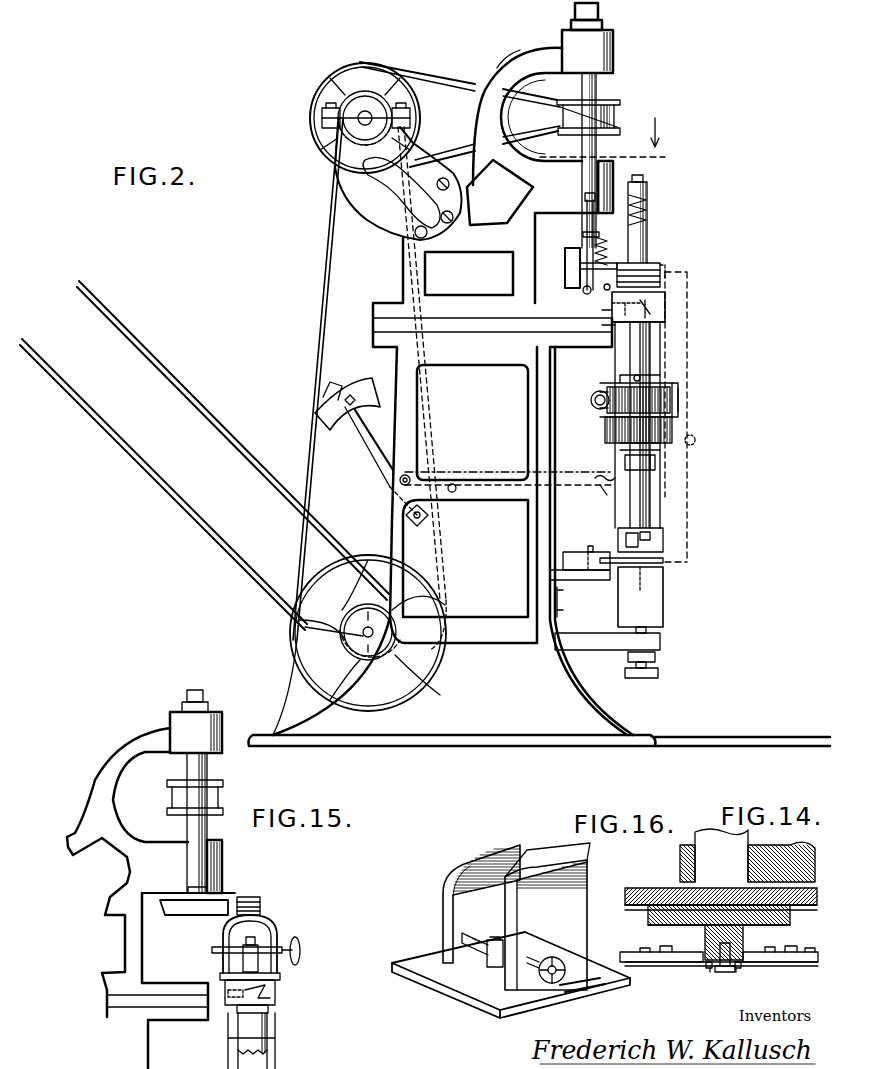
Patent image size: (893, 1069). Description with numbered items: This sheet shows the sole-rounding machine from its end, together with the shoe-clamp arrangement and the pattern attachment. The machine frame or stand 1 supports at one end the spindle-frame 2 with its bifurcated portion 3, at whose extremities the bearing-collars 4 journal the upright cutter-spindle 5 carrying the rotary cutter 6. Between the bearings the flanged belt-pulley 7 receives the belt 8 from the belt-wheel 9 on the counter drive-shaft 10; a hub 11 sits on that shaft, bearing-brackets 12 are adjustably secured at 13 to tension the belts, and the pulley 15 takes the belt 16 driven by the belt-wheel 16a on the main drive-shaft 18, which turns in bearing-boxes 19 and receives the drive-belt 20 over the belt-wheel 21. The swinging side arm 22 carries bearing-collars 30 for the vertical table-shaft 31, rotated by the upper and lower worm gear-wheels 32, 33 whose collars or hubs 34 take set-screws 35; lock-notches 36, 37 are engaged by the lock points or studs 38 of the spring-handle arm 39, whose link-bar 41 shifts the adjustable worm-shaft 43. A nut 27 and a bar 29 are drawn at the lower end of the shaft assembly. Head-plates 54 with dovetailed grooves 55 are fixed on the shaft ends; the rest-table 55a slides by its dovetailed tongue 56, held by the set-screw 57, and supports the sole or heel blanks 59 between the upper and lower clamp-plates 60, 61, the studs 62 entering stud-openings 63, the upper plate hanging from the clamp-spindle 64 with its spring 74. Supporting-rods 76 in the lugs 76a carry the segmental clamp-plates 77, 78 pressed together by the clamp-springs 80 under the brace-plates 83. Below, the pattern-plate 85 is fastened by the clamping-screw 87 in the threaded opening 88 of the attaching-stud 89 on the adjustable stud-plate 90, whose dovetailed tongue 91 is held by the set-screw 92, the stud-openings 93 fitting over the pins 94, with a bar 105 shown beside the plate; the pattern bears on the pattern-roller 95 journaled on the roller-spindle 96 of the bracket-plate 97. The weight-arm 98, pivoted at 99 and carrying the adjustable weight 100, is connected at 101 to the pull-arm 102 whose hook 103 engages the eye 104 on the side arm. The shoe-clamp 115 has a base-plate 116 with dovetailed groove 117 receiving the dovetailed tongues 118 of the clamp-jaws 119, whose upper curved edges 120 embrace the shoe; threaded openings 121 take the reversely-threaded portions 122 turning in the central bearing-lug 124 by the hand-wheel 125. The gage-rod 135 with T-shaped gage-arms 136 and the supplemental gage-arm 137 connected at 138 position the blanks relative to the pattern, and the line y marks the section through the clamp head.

In FIG. 2, the machine frame or stand 1 is at (540, 374).
In FIG. 15, the machine frame or stand 1 is at (107, 1017).
In FIG. 2, the spindle-frame 2 is at (527, 58).
In FIG. 15, the spindle-frame 2 is at (110, 723).
In FIG. 2, the bifurcated portion 3 is at (543, 70).
In FIG. 15, the bifurcated portion 3 is at (113, 773).
In FIG. 2, the bearing-collars 4 is at (614, 47).
In FIG. 15, the bearing-collars 4 is at (196, 802).
In FIG. 2, the cutter-spindle 5 is at (598, 86).
In FIG. 15, the cutter-spindle 5 is at (209, 767).
In FIG. 2, the rotary cutter 6 is at (564, 264).
In FIG. 15, the rotary cutter 6 is at (184, 915).
In FIG. 2, the flanged belt-pulley 7 is at (618, 124).
In FIG. 15, the flanged belt-pulley 7 is at (200, 797).
In FIG. 2, the belt 8 is at (460, 85).
In FIG. 2, the belt-wheel 9 is at (370, 63).
In FIG. 2, the counter drive-shaft 10 is at (366, 126).
In FIG. 2, the pulley shaft 11 is at (366, 110).
In FIG. 2, the bearing-brackets 12 is at (362, 200).
In FIG. 2, the adjustable securing point 13 is at (450, 222).
In FIG. 2, the pulley 15 is at (392, 105).
In FIG. 2, the belt 16 is at (322, 292).
In FIG. 2, the belt-wheel 16a is at (440, 665).
In FIG. 15, the belt-wheel 16a is at (188, 889).
In FIG. 2, the main drive-shaft 18 is at (374, 632).
In FIG. 2, the bearing-boxes 19 is at (342, 628).
In FIG. 2, the drive-belt 20 is at (220, 545).
In FIG. 2, the belt-wheel 21 is at (345, 612).
In FIG. 15, the swinging side arm 22 is at (228, 1054).
In FIG. 2, the nut 27 is at (648, 679).
In FIG. 2, the cross bar 29 is at (596, 651).
In FIG. 2, the bearing-collars 30 is at (622, 340).
In FIG. 15, the bearing-collars 30 is at (276, 1025).
In FIG. 14, the bearing-collars 30 is at (680, 853).
In FIG. 2, the vertical table-shaft 31 is at (660, 363).
In FIG. 15, the vertical table-shaft 31 is at (262, 1050).
In FIG. 14, the vertical table-shaft 31 is at (721, 855).
In FIG. 2, the upper worm gear-wheel 32 is at (678, 410).
In FIG. 2, the lower worm gear-wheel 33 is at (672, 430).
In FIG. 2, the collars or hubs 34 is at (620, 375).
In FIG. 2, the set-screws 35 is at (600, 384).
In FIG. 2, the lock-notches 36 is at (620, 448).
In FIG. 2, the lock-notches 37 is at (600, 388).
In FIG. 2, the lock points or studs 38 is at (678, 385).
In FIG. 2, the spring-handle arm 39 is at (679, 398).
In FIG. 2, the link-bar 41 is at (591, 403).
In FIG. 2, the adjustable worm-shaft 43 is at (597, 408).
In FIG. 2, the head-plates 54 is at (666, 316).
In FIG. 14, the head-plates 54 is at (655, 888).
In FIG. 2, the dovetailed grooves 55 is at (665, 305).
In FIG. 14, the dovetailed grooves 55 is at (625, 908).
In FIG. 2, the rest-table 55a is at (665, 298).
In FIG. 2, the dovetailed tongue 56 is at (602, 325).
In FIG. 15, the dovetailed tongue 56 is at (245, 998).
In FIG. 2, the set-screw 57 is at (602, 310).
In FIG. 15, the set-screw 57 is at (228, 991).
In FIG. 2, the sole or heel blanks 59 is at (605, 293).
In FIG. 2, the upper clamp-plate 60 is at (648, 268).
In FIG. 2, the lower clamp-plate 61 is at (670, 280).
In FIG. 2, the studs 62 is at (638, 307).
In FIG. 2, the stud-openings 63 is at (647, 305).
In FIG. 2, the clamp-spindle 64 is at (638, 180).
In FIG. 15, the clamp-spindle 64 is at (202, 690).
In FIG. 2, the spring 74 is at (648, 205).
In FIG. 2, the supporting-rods 76 is at (586, 224).
In FIG. 2, the lugs 76a is at (584, 198).
In FIG. 2, the upper segmental clamp-plate 77 is at (580, 268).
In FIG. 2, the lower segmental clamp-plate 78 is at (583, 291).
In FIG. 2, the clamp-springs 80 is at (610, 249).
In FIG. 2, the brace-plates 83 is at (599, 234).
In FIG. 14, the pattern-plate 85 is at (658, 966).
In FIG. 14, the clamping-screw 87 is at (724, 973).
In FIG. 14, the threaded opening 88 is at (743, 945).
In FIG. 14, the attaching-stud 89 is at (713, 942).
In FIG. 14, the adjustable stud-plate 90 is at (660, 926).
In FIG. 2, the dovetailed tongue 91 is at (626, 542).
In FIG. 14, the dovetailed tongue 91 is at (648, 920).
In FIG. 2, the set-screw 92 is at (652, 536).
In FIG. 14, the stud-openings 93 is at (705, 967).
In FIG. 14, the pins 94 is at (708, 973).
In FIG. 2, the pattern-roller 95 is at (576, 555).
In FIG. 2, the roller-spindle 96 is at (588, 539).
In FIG. 2, the bracket-plate 97 is at (582, 580).
In FIG. 2, the weight-arm 98 is at (375, 455).
In FIG. 2, the pivot 99 is at (417, 527).
In FIG. 2, the adjustable weight 100 is at (330, 430).
In FIG. 2, the pivotal connection 101 is at (405, 475).
In FIG. 2, the pull-arm 102 is at (477, 472).
In FIG. 2, the hook 103 is at (602, 475).
In FIG. 2, the eye 104 is at (607, 494).
In FIG. 14, the bar 105 is at (622, 954).
In FIG. 15, the shoe-clamp 115 is at (285, 930).
In FIG. 16, the shoe-clamp 115 is at (511, 924).
In FIG. 15, the base-plate 116 is at (280, 980).
In FIG. 16, the base-plate 116 is at (440, 985).
In FIG. 16, the dovetailed groove 117 is at (578, 990).
In FIG. 16, the dovetailed tongues 118 is at (590, 990).
In FIG. 15, the clamp-jaws 119 is at (226, 934).
In FIG. 16, the clamp-jaws 119 is at (444, 888).
In FIG. 16, the upper curved edges 120 is at (493, 850).
In FIG. 16, the threaded openings 121 is at (466, 934).
In FIG. 15, the reversely-threaded portions 122 is at (214, 953).
In FIG. 15, the central bearing-lug 124 is at (252, 947).
In FIG. 16, the central bearing-lug 124 is at (492, 943).
In FIG. 15, the hand-wheel 125 is at (300, 945).
In FIG. 16, the hand-wheel 125 is at (554, 956).
In FIG. 2, the gage-rod 135 is at (688, 353).
In FIG. 2, the T-shaped gage-arms 136 is at (676, 268).
In FIG. 2, the supplemental gage-arm 137 is at (655, 462).
In FIG. 2, the adjustable connection 138 is at (696, 444).
In FIG. 2, the section line y y is at (602, 140).